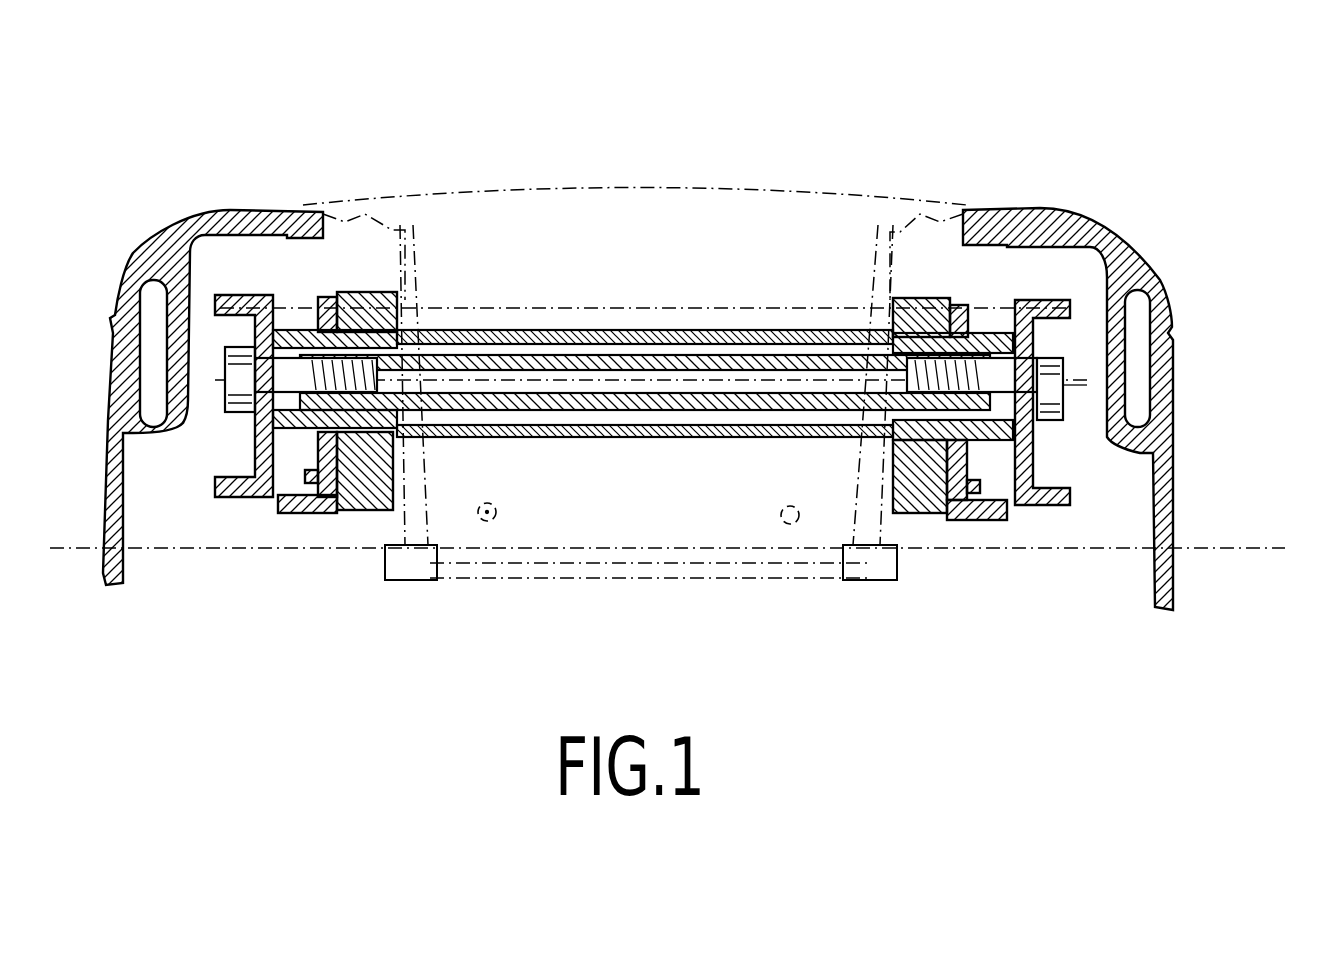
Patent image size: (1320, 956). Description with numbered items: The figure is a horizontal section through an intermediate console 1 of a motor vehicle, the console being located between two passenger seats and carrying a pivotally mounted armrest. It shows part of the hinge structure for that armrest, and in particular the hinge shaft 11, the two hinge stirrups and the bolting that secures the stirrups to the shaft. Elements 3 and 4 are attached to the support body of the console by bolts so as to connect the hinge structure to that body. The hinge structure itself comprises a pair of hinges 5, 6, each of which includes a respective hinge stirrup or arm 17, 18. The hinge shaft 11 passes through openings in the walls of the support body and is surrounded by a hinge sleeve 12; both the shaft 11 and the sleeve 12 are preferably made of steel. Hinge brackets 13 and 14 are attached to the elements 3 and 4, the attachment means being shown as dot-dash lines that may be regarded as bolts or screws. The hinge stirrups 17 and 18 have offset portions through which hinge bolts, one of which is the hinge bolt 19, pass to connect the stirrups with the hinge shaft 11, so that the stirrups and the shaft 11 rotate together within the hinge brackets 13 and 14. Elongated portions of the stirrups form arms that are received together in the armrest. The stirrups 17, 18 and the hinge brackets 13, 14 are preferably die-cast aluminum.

The intermediate console 1 is at (1200, 320).
The element 3 is at (363, 500).
The element 4 is at (933, 515).
The hinge 5 is at (293, 296).
The hinge 6 is at (1058, 288).
The hinge shaft 11 is at (763, 360).
The hinge sleeve 12 is at (553, 330).
The hinge bracket 13 is at (300, 513).
The hinge bracket 14 is at (993, 522).
The hinge stirrup 17 is at (233, 497).
The hinge stirrup 18 is at (1070, 510).
The hinge bolt 19 is at (223, 362).